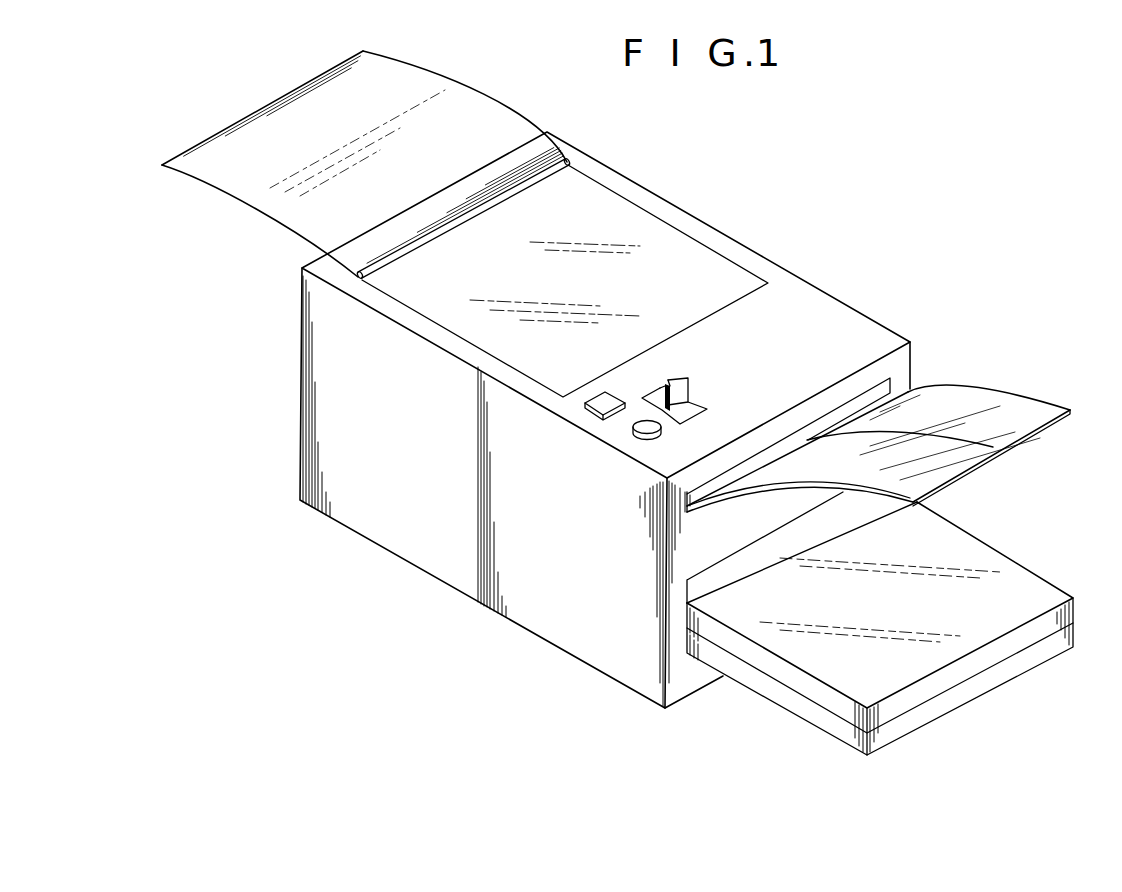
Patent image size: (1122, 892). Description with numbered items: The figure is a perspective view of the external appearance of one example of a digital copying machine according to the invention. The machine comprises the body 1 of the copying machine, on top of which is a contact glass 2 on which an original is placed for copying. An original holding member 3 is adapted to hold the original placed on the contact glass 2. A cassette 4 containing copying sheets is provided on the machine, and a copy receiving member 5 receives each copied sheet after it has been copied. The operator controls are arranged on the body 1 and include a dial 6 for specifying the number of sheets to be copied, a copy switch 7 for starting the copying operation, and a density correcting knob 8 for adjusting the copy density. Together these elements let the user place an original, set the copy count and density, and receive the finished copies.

The body of the copying machine 1 is at (823, 318).
The contact glass 2 is at (647, 230).
The original holding member 3 is at (478, 112).
The cassette 4 is at (1028, 592).
The copy receiving member 5 is at (990, 402).
The dial 6 is at (633, 437).
The copy switch 7 is at (587, 413).
The density correcting knob 8 is at (685, 392).